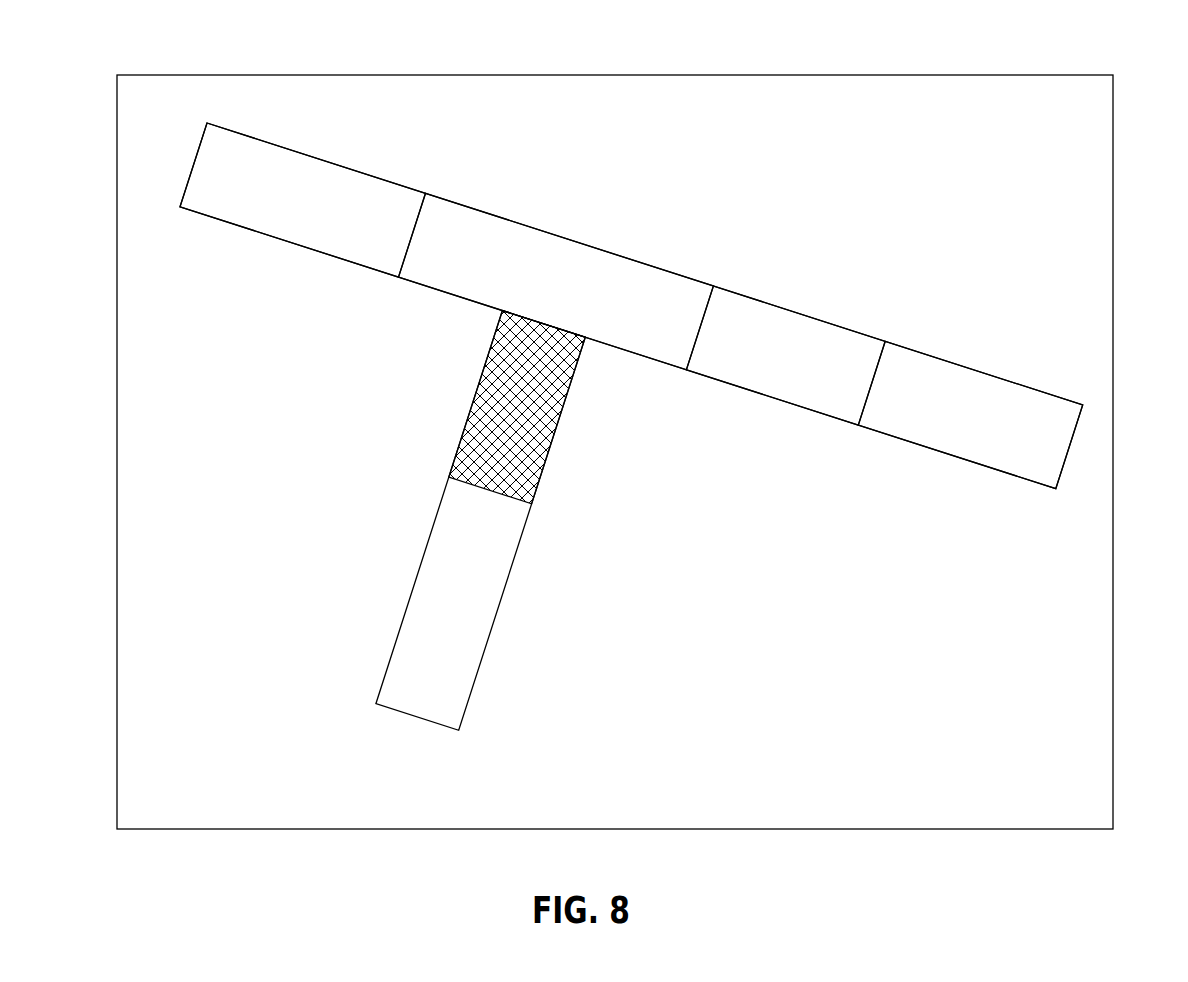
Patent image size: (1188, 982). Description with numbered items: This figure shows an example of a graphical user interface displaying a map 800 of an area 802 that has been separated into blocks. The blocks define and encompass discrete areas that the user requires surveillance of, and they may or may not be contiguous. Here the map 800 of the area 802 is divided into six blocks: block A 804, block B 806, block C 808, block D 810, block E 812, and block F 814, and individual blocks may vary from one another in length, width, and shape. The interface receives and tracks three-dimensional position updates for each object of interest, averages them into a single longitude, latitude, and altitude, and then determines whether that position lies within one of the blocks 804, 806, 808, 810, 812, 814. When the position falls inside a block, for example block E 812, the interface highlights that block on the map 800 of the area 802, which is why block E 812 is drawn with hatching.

The map 800 is at (645, 67).
The area 802 is at (1098, 640).
The block A 804 is at (310, 145).
The block B 806 is at (575, 232).
The block C 808 is at (790, 298).
The block D 810 is at (975, 362).
The block E 812 is at (567, 430).
The block F 814 is at (498, 630).